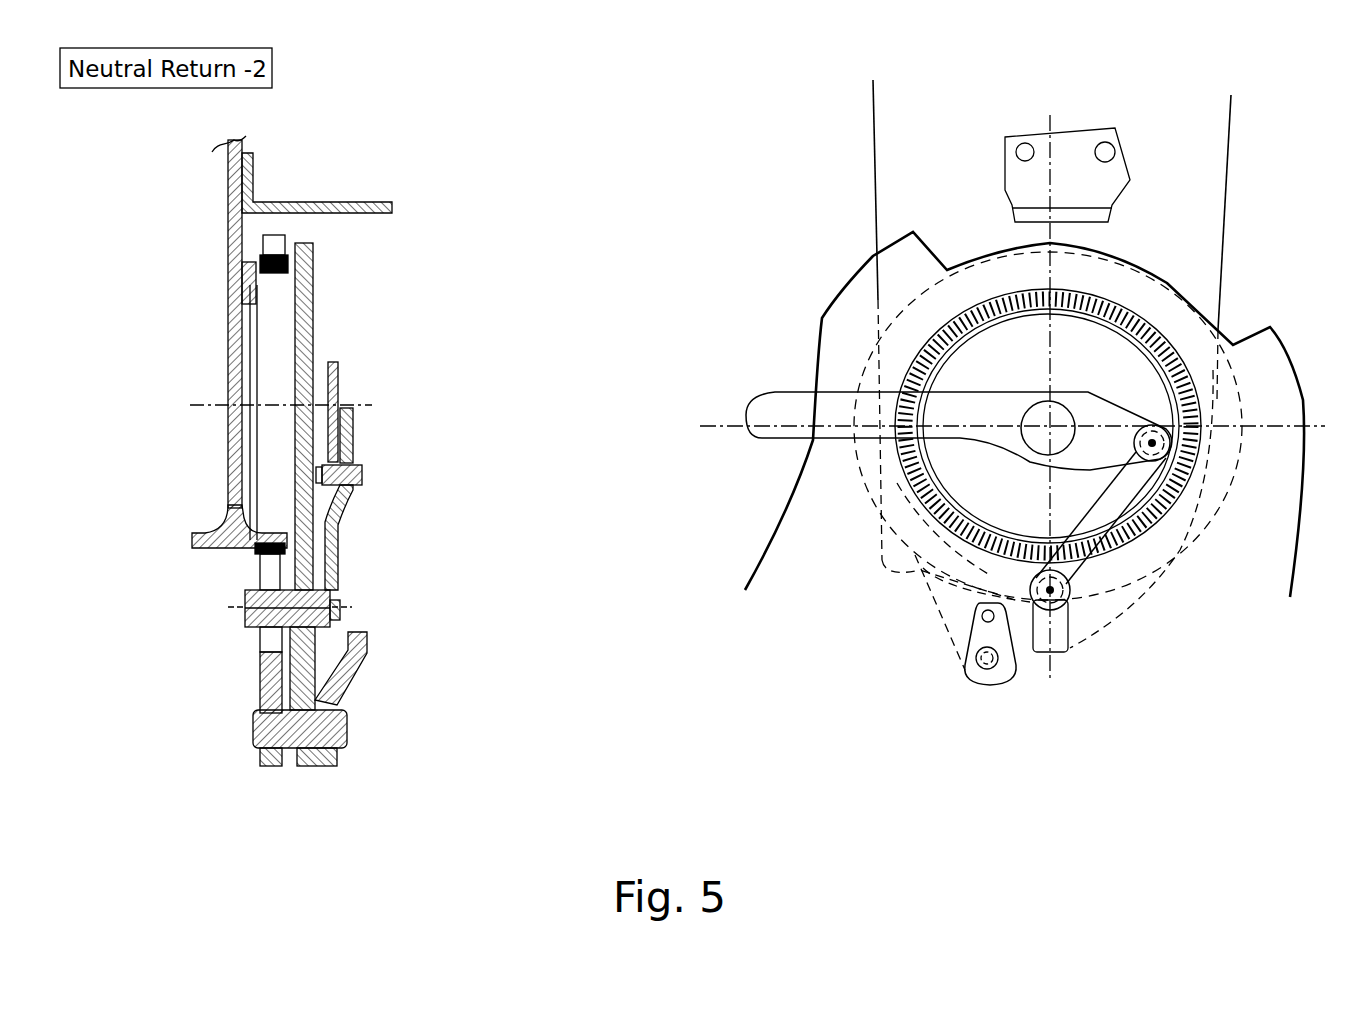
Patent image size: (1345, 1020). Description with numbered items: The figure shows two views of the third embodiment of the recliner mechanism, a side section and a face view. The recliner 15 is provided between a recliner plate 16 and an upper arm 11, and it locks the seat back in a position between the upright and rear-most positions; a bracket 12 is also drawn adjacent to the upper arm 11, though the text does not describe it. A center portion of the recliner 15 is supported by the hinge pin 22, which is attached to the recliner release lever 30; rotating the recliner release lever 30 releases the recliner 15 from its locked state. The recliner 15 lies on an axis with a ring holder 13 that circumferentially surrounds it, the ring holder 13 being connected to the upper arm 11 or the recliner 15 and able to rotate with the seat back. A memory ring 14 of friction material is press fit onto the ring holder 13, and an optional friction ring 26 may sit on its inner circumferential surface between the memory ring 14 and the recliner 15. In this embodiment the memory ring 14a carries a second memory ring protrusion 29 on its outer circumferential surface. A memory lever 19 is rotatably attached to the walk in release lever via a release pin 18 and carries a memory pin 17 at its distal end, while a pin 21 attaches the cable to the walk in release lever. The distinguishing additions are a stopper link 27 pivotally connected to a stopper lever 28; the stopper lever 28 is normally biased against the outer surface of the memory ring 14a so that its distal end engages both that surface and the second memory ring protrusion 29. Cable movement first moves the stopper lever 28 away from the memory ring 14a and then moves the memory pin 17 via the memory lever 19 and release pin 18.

The upper arm 11 is at (235, 245).
The mounting bracket 12 is at (345, 207).
The ring holder 13 is at (243, 518).
The memory ring 14 is at (270, 640).
The memory ring 14a is at (877, 487).
The recliner 15 is at (277, 347).
The recliner plate 16 is at (307, 762).
The memory pin 17 is at (246, 607).
The release pin 18 is at (364, 477).
The memory lever 19 is at (335, 508).
The pin 21 is at (1170, 455).
The hinge pin 22 is at (1155, 525).
The friction ring 26 is at (246, 264).
The stopper link 27 is at (362, 652).
The stopper lever 28 is at (268, 760).
The second memory ring protrusion 29 is at (895, 557).
The recliner release lever 30 is at (333, 383).